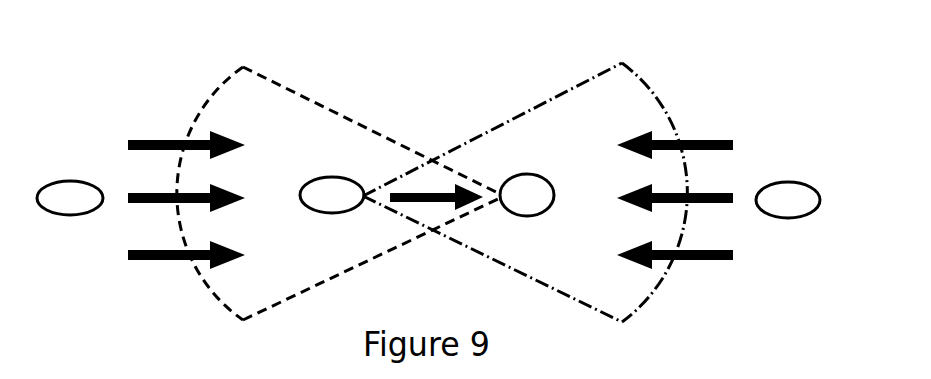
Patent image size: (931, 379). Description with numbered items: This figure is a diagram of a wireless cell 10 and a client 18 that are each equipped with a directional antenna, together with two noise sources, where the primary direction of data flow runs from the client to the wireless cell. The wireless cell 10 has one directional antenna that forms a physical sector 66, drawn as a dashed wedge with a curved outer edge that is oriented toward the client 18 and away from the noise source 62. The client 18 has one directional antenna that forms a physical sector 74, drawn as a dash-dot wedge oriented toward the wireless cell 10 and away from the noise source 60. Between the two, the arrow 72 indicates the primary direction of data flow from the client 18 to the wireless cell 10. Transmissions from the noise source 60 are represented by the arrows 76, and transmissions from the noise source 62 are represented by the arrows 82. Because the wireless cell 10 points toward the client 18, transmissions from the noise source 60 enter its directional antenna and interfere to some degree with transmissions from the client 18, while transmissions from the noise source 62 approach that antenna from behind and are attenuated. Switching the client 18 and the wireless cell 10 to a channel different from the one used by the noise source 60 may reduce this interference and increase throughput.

The wireless cell 10 is at (513, 206).
The client 18 is at (318, 206).
The noise source 60 is at (56, 208).
The noise source 62 is at (774, 210).
The physical sector 66 is at (245, 66).
The physical sector 74 is at (567, 92).
The arrow 72 is at (416, 192).
The arrows 76 is at (110, 125).
The arrows 82 is at (743, 130).